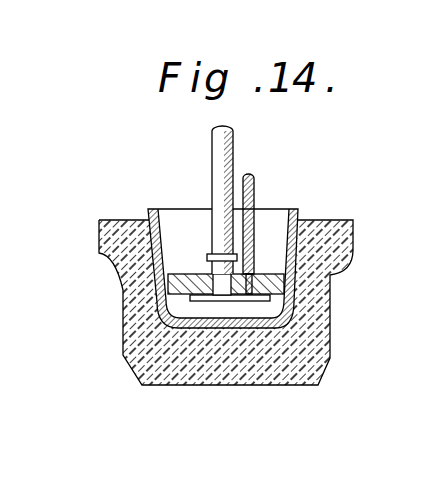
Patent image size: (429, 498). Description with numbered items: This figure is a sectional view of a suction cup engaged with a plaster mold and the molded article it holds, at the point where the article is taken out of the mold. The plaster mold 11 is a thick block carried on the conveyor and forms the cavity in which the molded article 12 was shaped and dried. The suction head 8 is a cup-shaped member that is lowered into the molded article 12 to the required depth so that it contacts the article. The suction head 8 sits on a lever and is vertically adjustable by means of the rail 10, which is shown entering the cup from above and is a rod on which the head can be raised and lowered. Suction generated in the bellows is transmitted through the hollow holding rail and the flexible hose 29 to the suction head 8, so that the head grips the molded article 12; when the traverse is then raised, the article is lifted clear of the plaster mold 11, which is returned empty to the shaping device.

The suction head 8 is at (297, 212).
The rail 10 is at (212, 163).
The plaster mold 11 is at (312, 348).
The molded article 12 is at (332, 272).
The flexible hose 29 is at (255, 189).